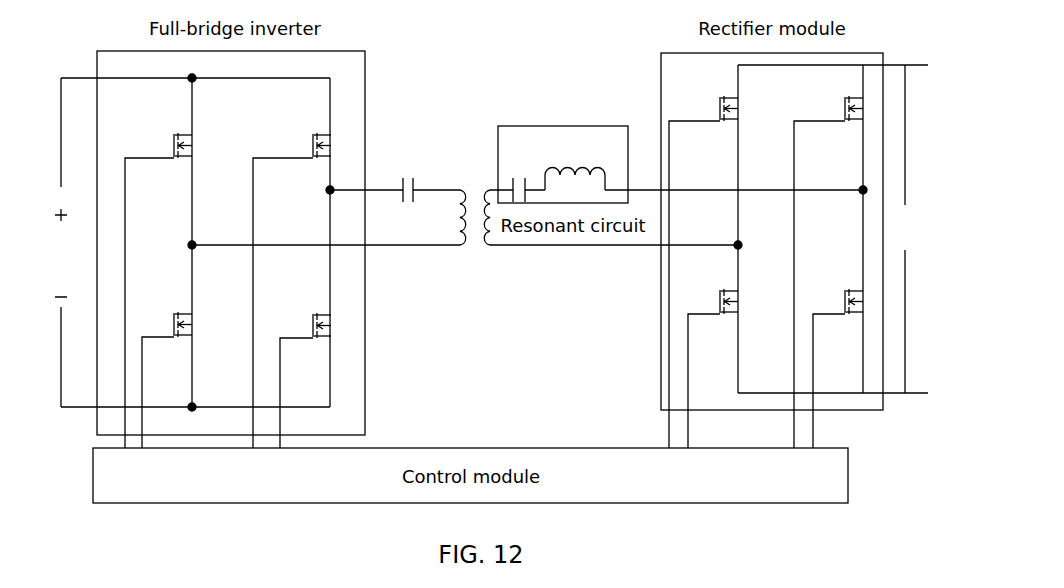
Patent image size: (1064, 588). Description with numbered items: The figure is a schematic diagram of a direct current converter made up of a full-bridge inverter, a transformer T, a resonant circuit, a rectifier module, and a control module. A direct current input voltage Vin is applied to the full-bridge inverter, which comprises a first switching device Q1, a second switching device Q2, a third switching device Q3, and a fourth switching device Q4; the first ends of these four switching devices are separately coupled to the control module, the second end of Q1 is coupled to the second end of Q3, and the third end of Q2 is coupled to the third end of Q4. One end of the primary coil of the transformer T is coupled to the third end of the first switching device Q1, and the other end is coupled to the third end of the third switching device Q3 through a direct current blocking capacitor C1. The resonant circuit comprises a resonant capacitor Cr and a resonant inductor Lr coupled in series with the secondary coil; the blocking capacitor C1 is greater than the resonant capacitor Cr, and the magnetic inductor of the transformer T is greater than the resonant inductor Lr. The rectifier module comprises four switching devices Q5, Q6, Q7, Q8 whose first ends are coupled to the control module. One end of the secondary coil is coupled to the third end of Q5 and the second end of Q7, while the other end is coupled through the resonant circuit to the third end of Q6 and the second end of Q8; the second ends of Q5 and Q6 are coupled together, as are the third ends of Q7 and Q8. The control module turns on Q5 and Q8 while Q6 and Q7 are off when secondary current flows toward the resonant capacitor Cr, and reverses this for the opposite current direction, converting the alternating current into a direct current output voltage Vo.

The first switching device Q1 is at (165, 143).
The second switching device Q2 is at (165, 324).
The third switching device Q3 is at (302, 143).
The fourth switching device Q4 is at (303, 324).
The switching device Q5 is at (710, 106).
The switching device Q6 is at (834, 106).
The switching device Q7 is at (709, 300).
The switching device Q8 is at (835, 300).
The direct current blocking capacitor C1 is at (407, 179).
The transformer T is at (462, 217).
The resonant capacitor Cr is at (522, 176).
The resonant inductor Lr is at (575, 164).
The input voltage Vin is at (62, 242).
The output voltage Vo is at (907, 229).